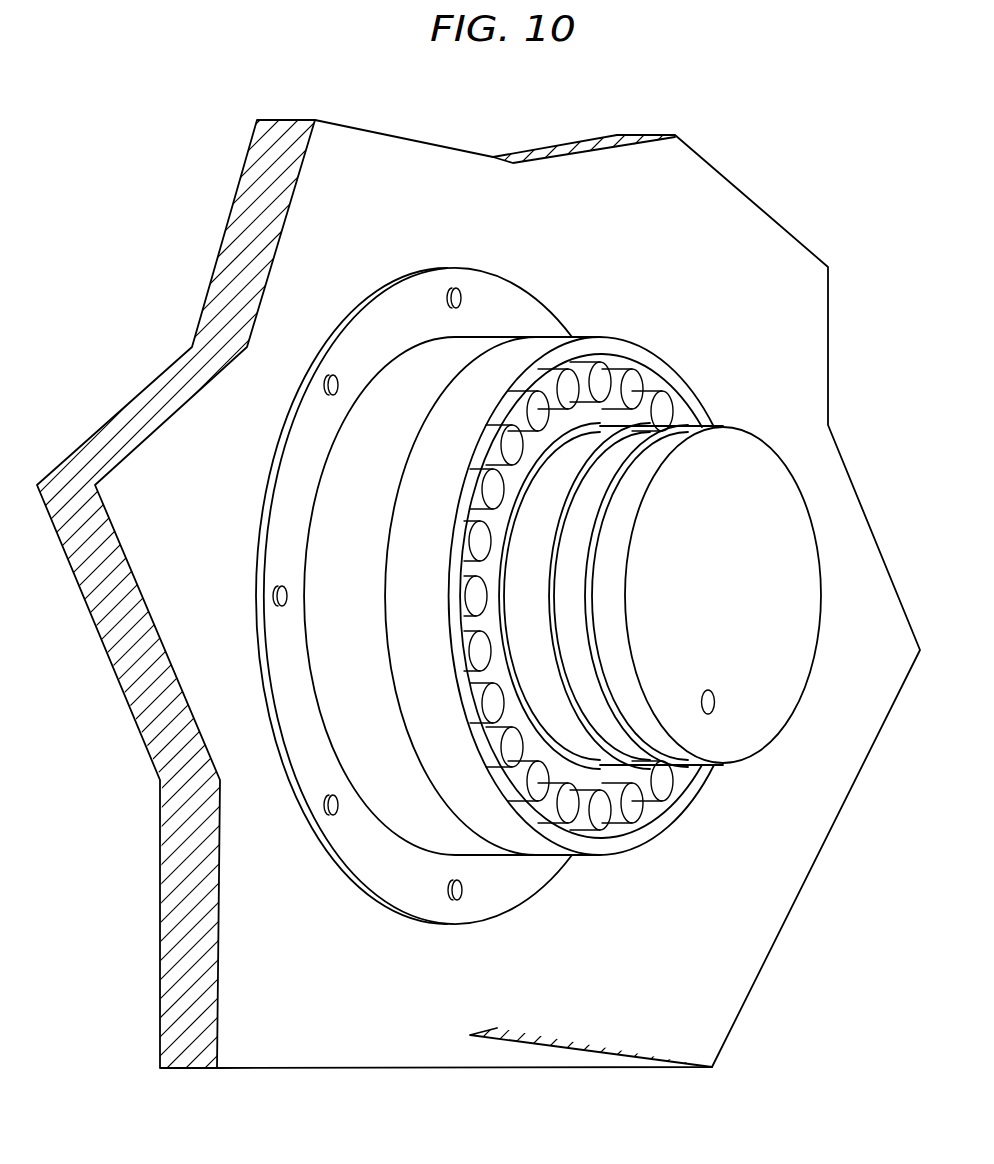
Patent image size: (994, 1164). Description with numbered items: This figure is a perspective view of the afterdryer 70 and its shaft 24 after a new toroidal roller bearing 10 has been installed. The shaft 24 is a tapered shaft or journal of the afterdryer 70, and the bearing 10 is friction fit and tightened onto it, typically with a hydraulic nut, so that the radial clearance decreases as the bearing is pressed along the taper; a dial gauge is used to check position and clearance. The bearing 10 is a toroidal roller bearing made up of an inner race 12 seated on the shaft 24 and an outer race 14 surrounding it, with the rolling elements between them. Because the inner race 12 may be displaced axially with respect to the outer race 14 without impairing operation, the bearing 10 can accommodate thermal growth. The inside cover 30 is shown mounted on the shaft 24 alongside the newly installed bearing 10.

The bearing 10 is at (603, 625).
The inner race 12 is at (612, 418).
The outer race 14 is at (683, 383).
The shaft 24 is at (793, 643).
The inside cover 30 is at (430, 852).
The afterdryer 70 is at (614, 263).